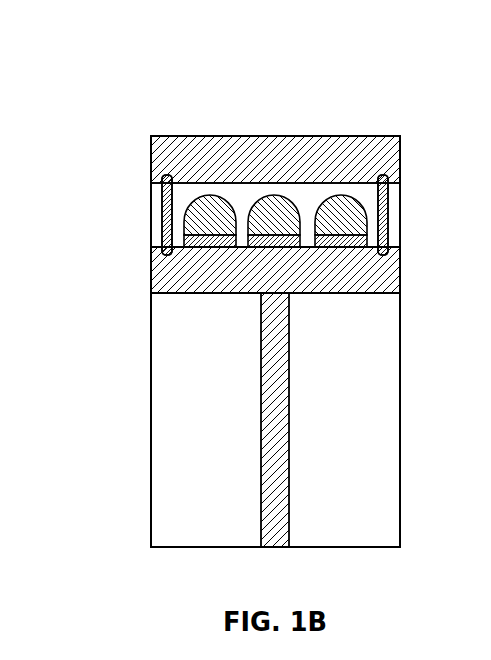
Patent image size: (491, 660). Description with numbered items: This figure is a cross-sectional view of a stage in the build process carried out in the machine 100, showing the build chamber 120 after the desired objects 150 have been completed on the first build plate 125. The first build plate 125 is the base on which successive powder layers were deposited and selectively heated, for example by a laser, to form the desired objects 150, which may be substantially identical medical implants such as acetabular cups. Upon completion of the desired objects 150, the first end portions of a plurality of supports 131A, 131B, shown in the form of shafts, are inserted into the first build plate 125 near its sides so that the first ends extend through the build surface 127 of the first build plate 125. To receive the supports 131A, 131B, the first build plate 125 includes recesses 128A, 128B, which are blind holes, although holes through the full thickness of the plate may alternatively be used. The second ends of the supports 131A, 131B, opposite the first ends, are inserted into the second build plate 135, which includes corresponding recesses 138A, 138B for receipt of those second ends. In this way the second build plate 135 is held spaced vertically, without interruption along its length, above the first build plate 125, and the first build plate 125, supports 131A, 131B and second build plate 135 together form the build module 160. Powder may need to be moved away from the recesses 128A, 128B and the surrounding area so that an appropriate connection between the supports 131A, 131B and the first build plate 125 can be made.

The machine 100 is at (125, 50).
The build chamber 120 is at (157, 113).
The first build plate 125 is at (211, 312).
The build surface 127 is at (304, 250).
The recess 128A is at (153, 295).
The recess 128B is at (392, 263).
The support 131A is at (172, 208).
The support 131B is at (388, 211).
The second build plate 135 is at (301, 186).
The recess 138A is at (153, 293).
The recess 138B is at (390, 176).
The desired objects 150 is at (321, 341).
The build module 160 is at (130, 137).